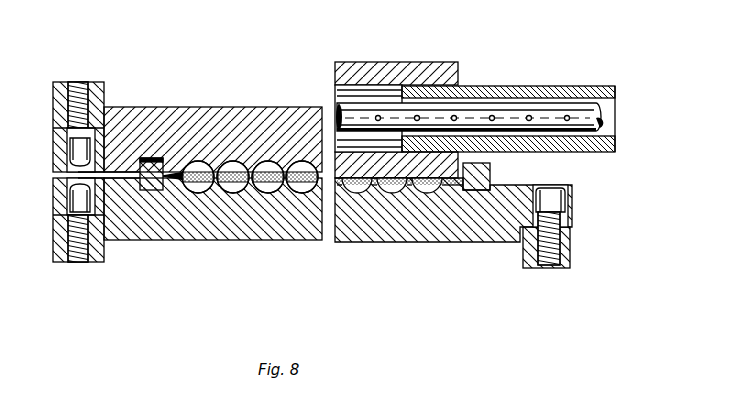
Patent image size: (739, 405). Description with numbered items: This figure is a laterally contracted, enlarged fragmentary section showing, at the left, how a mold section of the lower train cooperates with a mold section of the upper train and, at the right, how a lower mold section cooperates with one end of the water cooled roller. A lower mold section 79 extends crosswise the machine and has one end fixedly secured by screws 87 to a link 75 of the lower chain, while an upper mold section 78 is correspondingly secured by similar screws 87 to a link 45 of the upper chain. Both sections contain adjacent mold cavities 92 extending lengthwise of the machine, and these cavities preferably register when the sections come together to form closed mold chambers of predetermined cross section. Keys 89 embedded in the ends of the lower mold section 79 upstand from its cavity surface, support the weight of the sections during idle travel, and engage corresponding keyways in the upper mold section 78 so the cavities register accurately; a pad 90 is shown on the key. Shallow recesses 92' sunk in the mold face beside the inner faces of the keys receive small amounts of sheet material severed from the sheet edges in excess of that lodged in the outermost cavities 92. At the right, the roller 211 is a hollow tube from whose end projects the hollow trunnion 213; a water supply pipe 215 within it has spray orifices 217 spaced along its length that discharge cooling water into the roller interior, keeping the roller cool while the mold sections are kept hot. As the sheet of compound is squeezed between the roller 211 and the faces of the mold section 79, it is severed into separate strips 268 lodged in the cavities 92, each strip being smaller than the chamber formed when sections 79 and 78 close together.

The link of upper chain 45 is at (60, 82).
The link of lower chain 75 is at (57, 250).
The screw 87 is at (78, 262).
The upper mold section 78 is at (218, 115).
The lower mold section 79 is at (200, 222).
The key 89 is at (150, 158).
The stop pad 90 is at (152, 168).
The mold cavity 92 is at (322, 226).
The shallow recess 92' is at (131, 233).
The strip of compound 268 is at (268, 170).
The roller 211 is at (458, 70).
The hollow trunnion 213 is at (562, 87).
The water supply pipe 215 is at (500, 83).
The spray orifice 217 is at (590, 118).